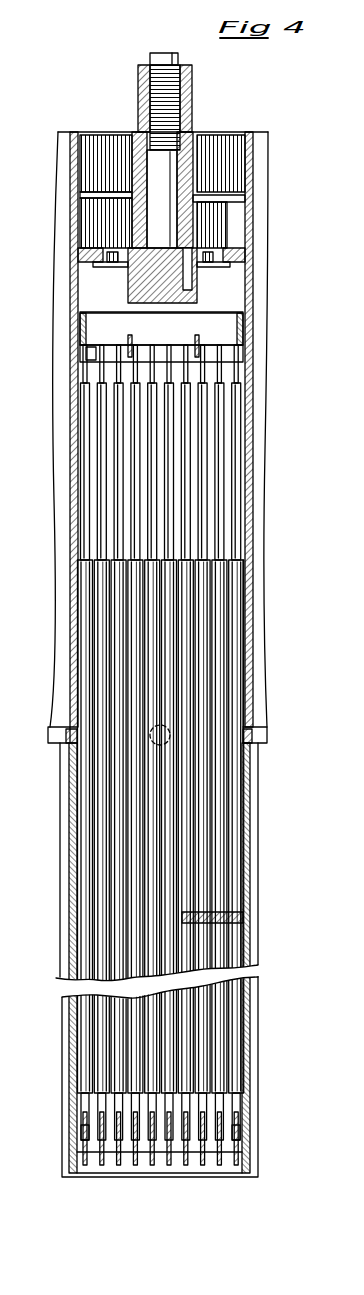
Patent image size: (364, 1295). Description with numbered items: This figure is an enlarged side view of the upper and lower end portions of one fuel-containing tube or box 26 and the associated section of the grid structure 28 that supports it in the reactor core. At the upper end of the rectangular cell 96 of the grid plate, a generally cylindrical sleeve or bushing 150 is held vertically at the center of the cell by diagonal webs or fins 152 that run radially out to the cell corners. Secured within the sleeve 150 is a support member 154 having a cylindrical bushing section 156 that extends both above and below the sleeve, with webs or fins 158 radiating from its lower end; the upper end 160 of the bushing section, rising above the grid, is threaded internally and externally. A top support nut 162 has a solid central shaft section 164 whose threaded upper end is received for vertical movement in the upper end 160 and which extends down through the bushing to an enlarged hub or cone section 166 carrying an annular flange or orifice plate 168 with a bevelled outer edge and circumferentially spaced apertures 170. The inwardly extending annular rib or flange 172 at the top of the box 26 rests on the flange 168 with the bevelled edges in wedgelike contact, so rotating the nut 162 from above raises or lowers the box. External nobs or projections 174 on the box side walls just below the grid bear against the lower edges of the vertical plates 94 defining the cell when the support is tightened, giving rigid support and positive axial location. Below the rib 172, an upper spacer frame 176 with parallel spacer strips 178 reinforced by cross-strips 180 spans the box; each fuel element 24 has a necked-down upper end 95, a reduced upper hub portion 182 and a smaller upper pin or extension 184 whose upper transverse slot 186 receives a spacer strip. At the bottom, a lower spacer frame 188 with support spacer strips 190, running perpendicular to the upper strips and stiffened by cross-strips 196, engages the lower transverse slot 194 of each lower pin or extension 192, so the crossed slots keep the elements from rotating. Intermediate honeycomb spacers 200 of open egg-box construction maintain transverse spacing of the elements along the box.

The fuel elements 24 is at (193, 738).
The fuel-containing tube or box 26 is at (255, 808).
The grid structure 28 is at (257, 236).
The vertical plates 94 is at (70, 645).
The necked down upper end 95 is at (158, 560).
The rectangular cell 96 is at (243, 612).
The sleeve or bushing 150 is at (202, 142).
The diagonal webs or fins 152 is at (101, 140).
The support member 154 is at (192, 80).
The bushing section 156 is at (195, 208).
The webs or fins 158 is at (85, 217).
The upper end of bushing section 160 is at (138, 76).
The top support nut 162 is at (157, 49).
The central shaft section 164 is at (173, 168).
The hub or cone section 166 is at (135, 292).
The flange or orifice plate 168 is at (110, 263).
The apertures or openings 170 is at (212, 262).
The annular rib or flange 172 is at (80, 252).
The nob or projection 174 is at (48, 733).
The upper spacer frame 176 is at (249, 351).
The spacer strips 178 is at (215, 345).
The cross-strips 180 is at (197, 340).
The upper hub portion 182 is at (238, 397).
The upper pin or extension 184 is at (240, 369).
The upper transverse slot 186 is at (96, 350).
The lower spacer frame 188 is at (243, 1163).
The lower support spacer strips 190 is at (82, 1147).
The lower pin or extension 192 is at (82, 1103).
The lower transverse slot 194 is at (83, 1125).
The cross-strips 196 is at (107, 1170).
The intermediate honeycomb spacers 200 is at (233, 914).